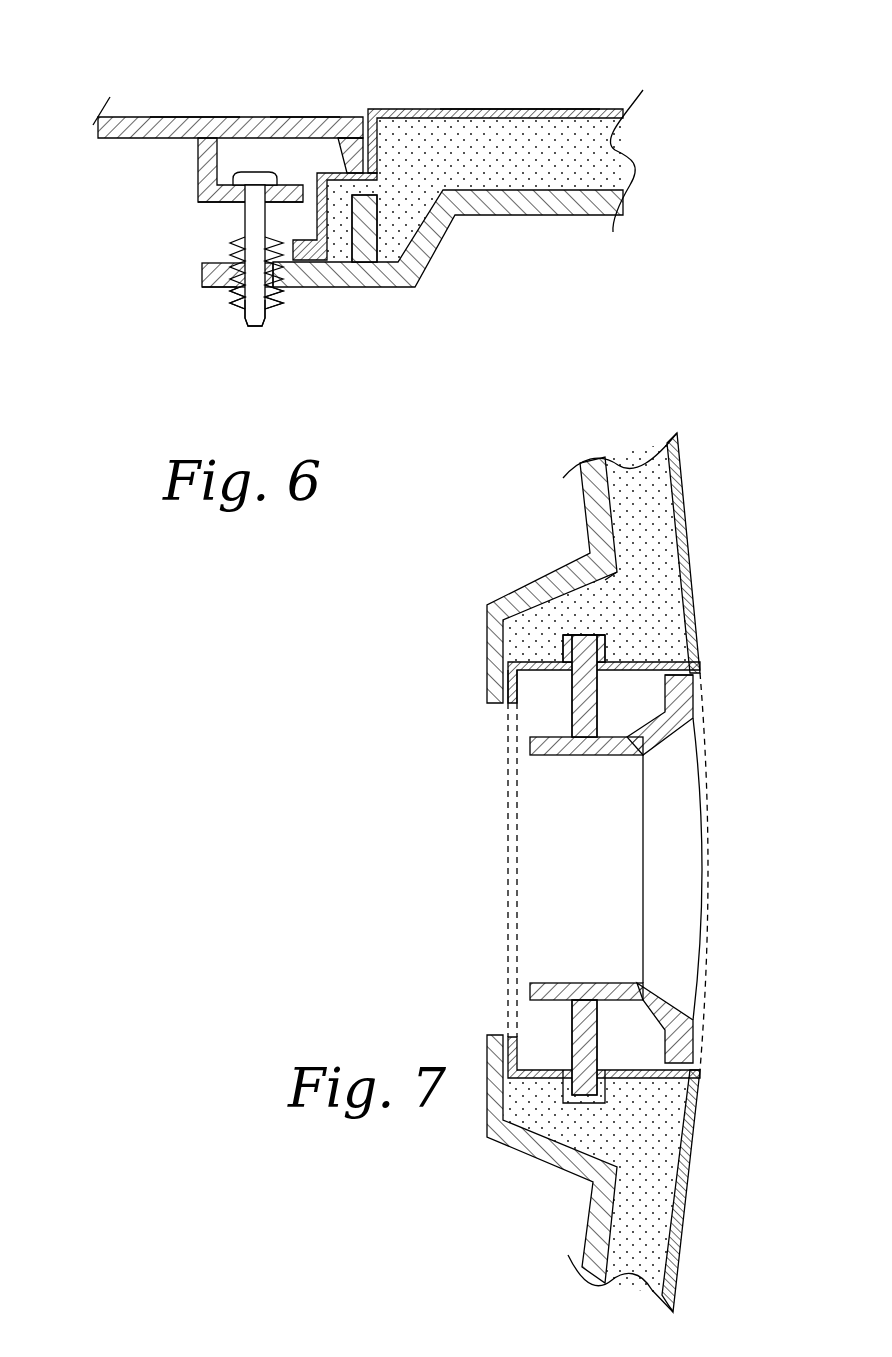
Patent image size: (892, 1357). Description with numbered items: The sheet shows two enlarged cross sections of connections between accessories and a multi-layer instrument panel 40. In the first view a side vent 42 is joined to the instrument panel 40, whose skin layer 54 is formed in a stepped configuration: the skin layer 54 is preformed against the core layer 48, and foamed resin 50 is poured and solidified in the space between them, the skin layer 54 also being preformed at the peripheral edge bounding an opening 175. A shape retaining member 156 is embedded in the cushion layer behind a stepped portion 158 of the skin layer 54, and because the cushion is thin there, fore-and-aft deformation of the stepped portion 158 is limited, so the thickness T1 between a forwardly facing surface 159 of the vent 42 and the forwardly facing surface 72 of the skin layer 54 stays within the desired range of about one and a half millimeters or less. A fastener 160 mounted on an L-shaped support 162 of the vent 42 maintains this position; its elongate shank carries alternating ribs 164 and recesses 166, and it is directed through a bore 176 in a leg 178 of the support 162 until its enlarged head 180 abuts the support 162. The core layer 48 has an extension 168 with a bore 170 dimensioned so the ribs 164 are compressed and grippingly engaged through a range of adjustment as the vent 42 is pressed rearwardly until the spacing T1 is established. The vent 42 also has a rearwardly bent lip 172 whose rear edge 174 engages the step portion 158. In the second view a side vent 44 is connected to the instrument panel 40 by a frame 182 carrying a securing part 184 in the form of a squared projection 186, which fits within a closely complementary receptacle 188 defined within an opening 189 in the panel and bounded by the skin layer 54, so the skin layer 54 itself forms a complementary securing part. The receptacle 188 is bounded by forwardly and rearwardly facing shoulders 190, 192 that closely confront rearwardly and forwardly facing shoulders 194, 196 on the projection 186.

In FIG. 6, the instrument panel 40 is at (613, 147).
In FIG. 7, the instrument panel 40 is at (635, 462).
In FIG. 6, the side vent 42 is at (148, 117).
In FIG. 7, the side vent 44 is at (705, 697).
In FIG. 6, the core layer 48 is at (571, 215).
In FIG. 6, the foamed resin 50 is at (595, 170).
In FIG. 6, the skin layer 54 is at (507, 109).
In FIG. 7, the skin layer 54 is at (618, 658).
In FIG. 6, the forwardly facing surface 72 is at (577, 109).
In FIG. 6, the shape retaining member 156 is at (368, 232).
In FIG. 6, the stepped portion 158 is at (300, 117).
In FIG. 6, the forwardly facing surface 159 is at (188, 117).
In FIG. 6, the fastener 160 is at (256, 312).
In FIG. 6, the L-shaped support 162 is at (205, 193).
In FIG. 6, the ribs 164 is at (237, 305).
In FIG. 6, the recesses 166 is at (283, 295).
In FIG. 6, the extension 168 is at (210, 290).
In FIG. 6, the bore 170 is at (237, 268).
In FIG. 6, the rearwardly bent lip 172 is at (338, 137).
In FIG. 6, the rear edge 174 is at (357, 180).
In FIG. 6, the opening 175 is at (300, 265).
In FIG. 6, the bore 176 is at (240, 213).
In FIG. 6, the leg 178 is at (217, 175).
In FIG. 6, the enlarged head 180 is at (250, 172).
In FIG. 6, the thickness T1 is at (327, 165).
In FIG. 7, the frame 182 is at (695, 672).
In FIG. 7, the securing part 184 is at (663, 672).
In FIG. 7, the squared projection 186 is at (660, 652).
In FIG. 7, the receptacle 188 is at (607, 638).
In FIG. 7, the opening 189 is at (547, 1070).
In FIG. 7, the forwardly facing shoulder 190 is at (585, 634).
In FIG. 7, the rearwardly facing shoulder 192 is at (590, 650).
In FIG. 7, the rearwardly facing shoulder 194 is at (568, 673).
In FIG. 7, the forwardly facing shoulder 196 is at (607, 645).